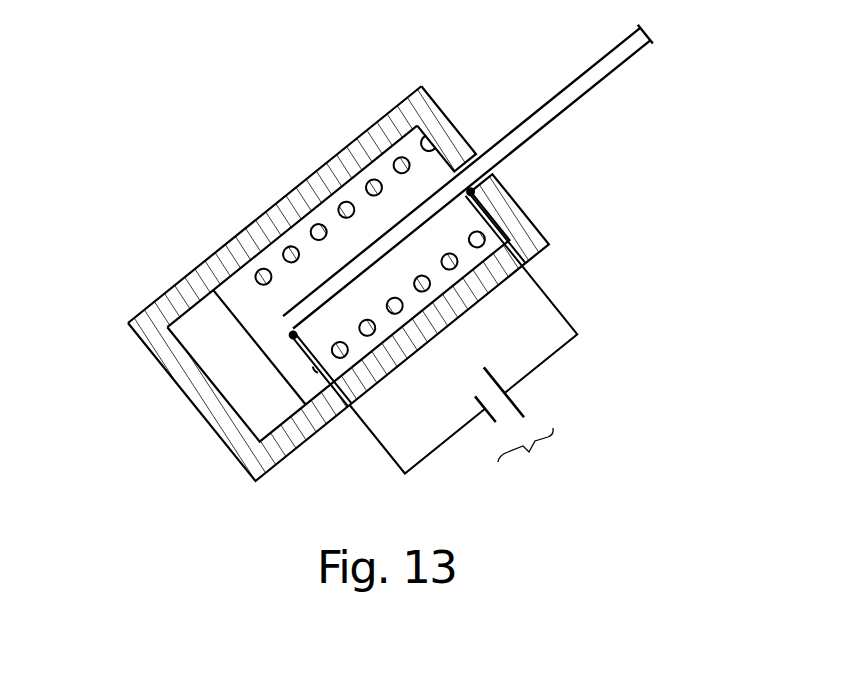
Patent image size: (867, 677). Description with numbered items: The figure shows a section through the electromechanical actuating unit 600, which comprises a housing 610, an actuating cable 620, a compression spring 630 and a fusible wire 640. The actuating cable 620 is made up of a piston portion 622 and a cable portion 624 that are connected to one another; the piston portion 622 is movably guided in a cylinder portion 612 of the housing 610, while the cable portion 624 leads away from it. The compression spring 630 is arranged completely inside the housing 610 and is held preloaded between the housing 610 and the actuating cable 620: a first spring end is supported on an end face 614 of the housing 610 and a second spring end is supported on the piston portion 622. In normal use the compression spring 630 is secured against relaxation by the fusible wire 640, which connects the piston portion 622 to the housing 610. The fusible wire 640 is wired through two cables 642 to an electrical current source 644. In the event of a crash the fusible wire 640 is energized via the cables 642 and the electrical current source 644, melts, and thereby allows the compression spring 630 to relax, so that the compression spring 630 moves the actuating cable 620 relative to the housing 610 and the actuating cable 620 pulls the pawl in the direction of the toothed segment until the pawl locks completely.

The electromechanical actuating unit 600 is at (374, 264).
The housing 610 is at (305, 180).
The cylinder portion 612 is at (267, 230).
The end face 614 is at (430, 118).
The actuating cable 620 is at (587, 88).
The piston portion 622 is at (230, 300).
The cable portion 624 is at (612, 53).
The compression spring 630 is at (363, 187).
The fusible wire 640 is at (447, 221).
The cables 642 is at (549, 299).
The electrical current source 644 is at (517, 425).